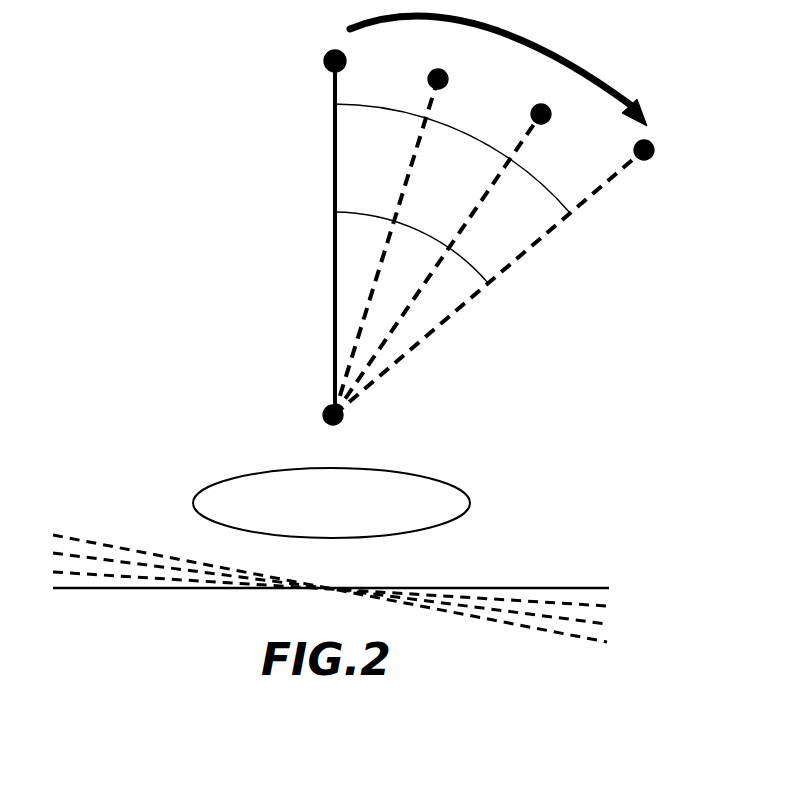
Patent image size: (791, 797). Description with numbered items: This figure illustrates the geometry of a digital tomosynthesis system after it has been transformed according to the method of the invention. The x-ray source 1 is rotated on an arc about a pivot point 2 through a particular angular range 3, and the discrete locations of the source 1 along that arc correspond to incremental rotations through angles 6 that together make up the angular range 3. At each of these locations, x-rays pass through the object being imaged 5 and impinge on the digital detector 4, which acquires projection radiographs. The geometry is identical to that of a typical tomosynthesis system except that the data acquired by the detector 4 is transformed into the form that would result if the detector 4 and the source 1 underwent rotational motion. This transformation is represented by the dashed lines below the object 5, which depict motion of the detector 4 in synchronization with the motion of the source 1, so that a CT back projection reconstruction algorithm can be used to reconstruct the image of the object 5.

The x-ray source 1 is at (327, 53).
The pivot point 2 is at (343, 415).
The angular range 3 is at (420, 218).
The digital detector 4 is at (590, 588).
The object being imaged 5 is at (470, 502).
The angles 6 is at (377, 100).